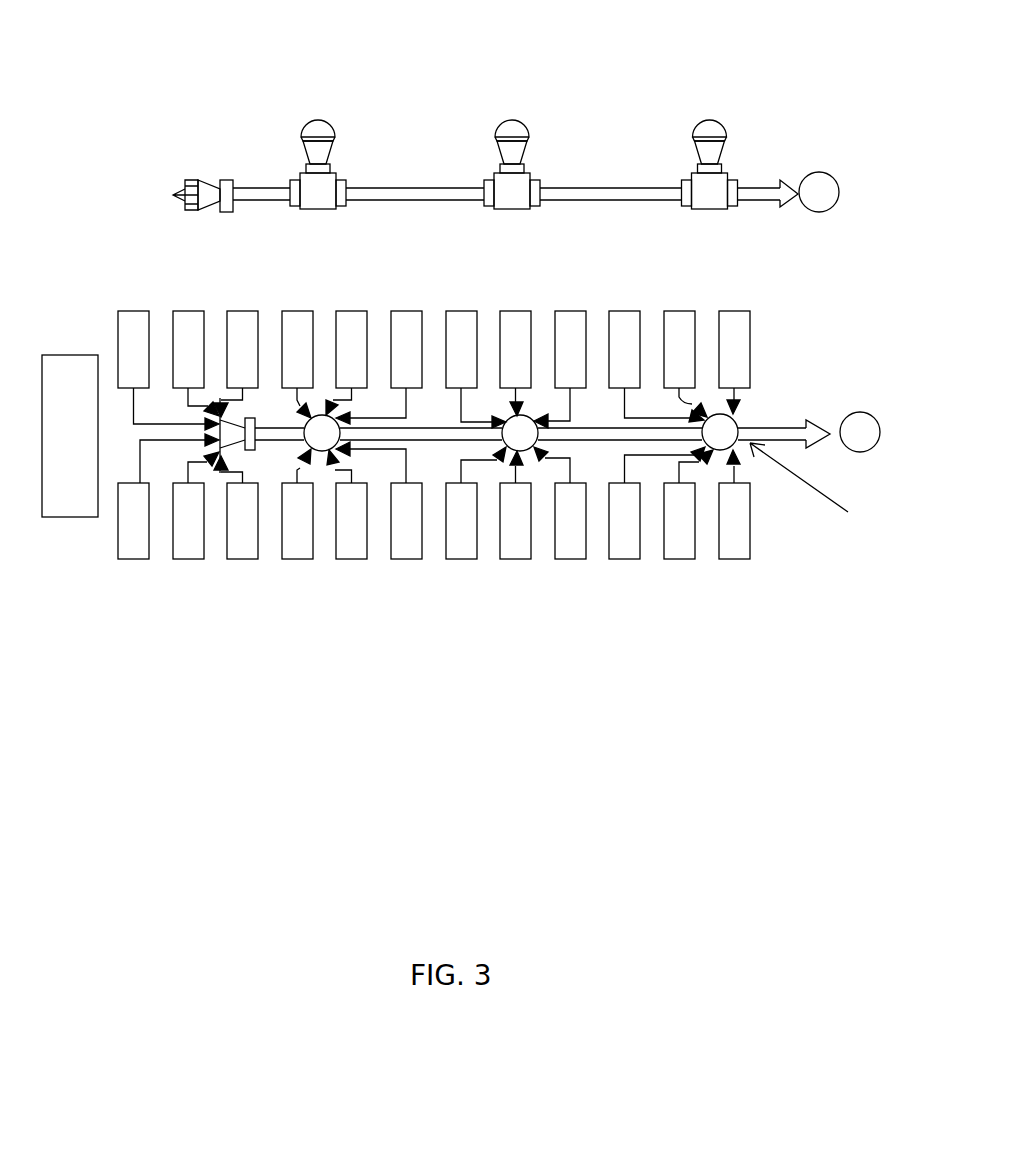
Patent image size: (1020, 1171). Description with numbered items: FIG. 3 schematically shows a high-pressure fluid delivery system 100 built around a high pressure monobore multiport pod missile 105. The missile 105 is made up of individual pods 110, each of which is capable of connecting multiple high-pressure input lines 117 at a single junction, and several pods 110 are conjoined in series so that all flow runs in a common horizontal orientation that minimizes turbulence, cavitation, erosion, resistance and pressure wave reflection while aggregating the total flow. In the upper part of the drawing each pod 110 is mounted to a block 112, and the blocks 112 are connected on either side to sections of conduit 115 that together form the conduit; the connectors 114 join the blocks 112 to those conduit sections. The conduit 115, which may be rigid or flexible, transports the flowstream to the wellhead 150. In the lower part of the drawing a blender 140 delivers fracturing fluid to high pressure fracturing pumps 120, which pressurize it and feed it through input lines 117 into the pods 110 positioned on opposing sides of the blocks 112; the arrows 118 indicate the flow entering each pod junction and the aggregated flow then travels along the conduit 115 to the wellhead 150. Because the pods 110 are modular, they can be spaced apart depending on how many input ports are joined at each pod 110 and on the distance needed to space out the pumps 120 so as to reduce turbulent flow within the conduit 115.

The high-pressure fluid delivery system 100 is at (45, 288).
The high pressure monobore multiport pod missile 105 is at (207, 108).
The pod 110 is at (335, 140).
The block 112 is at (337, 175).
The socket connector 114 is at (318, 210).
The conduit 115 is at (257, 190).
The high-pressure input line 117 is at (150, 462).
The node input 118 is at (816, 499).
The high pressure fracturing pump 120 is at (120, 560).
The blender 140 is at (68, 517).
The wellhead 150 is at (830, 212).